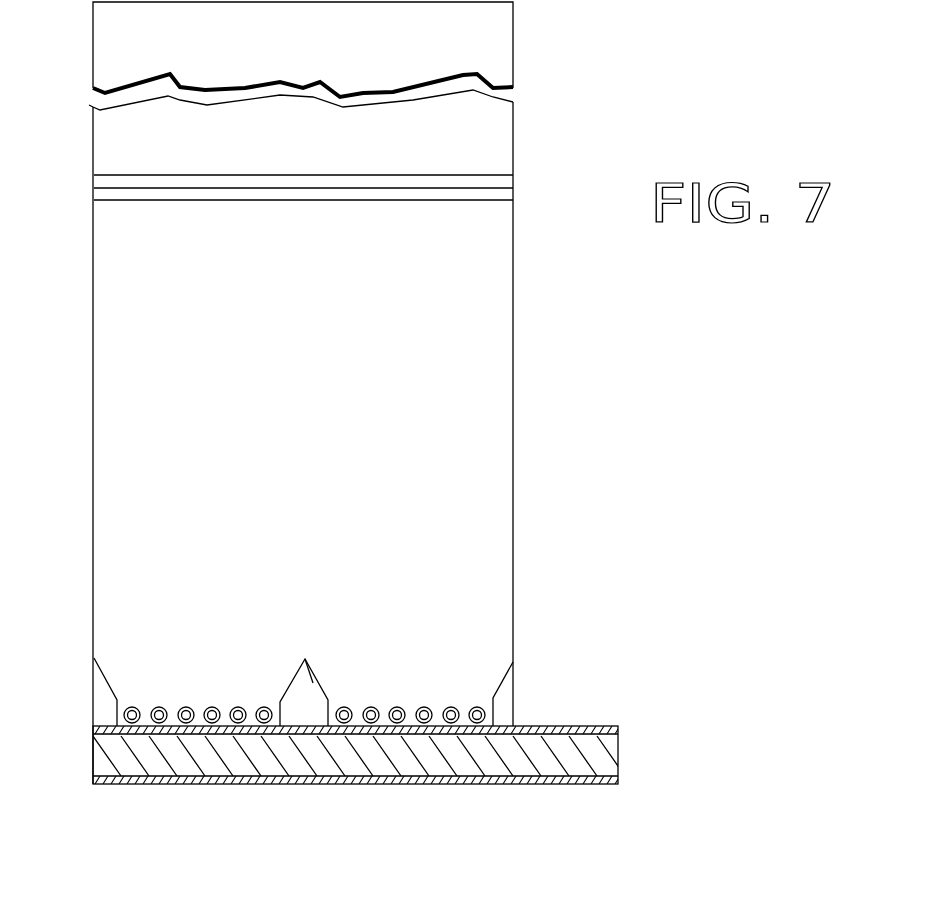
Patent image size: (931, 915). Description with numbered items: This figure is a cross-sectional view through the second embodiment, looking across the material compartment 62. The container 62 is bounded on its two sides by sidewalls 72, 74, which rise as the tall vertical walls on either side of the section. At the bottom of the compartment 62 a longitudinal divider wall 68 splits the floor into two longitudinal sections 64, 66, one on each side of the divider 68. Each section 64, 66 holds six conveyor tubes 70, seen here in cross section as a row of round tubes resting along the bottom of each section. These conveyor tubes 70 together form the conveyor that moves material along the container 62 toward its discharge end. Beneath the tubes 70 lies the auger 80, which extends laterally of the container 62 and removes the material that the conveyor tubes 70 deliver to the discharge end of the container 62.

The material compartment 62 is at (311, 393).
The longitudinal section 64 is at (200, 665).
The longitudinal section 66 is at (407, 668).
The longitudinal divider wall 68 is at (312, 683).
The conveyor tubes 70 is at (182, 706).
The sidewall 72 is at (92, 347).
The sidewall 74 is at (514, 350).
The auger 80 is at (557, 752).